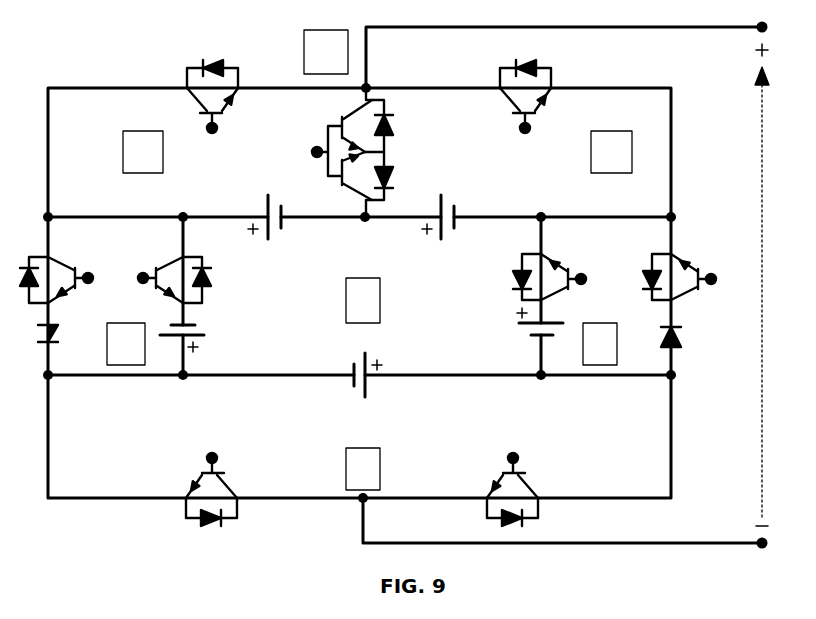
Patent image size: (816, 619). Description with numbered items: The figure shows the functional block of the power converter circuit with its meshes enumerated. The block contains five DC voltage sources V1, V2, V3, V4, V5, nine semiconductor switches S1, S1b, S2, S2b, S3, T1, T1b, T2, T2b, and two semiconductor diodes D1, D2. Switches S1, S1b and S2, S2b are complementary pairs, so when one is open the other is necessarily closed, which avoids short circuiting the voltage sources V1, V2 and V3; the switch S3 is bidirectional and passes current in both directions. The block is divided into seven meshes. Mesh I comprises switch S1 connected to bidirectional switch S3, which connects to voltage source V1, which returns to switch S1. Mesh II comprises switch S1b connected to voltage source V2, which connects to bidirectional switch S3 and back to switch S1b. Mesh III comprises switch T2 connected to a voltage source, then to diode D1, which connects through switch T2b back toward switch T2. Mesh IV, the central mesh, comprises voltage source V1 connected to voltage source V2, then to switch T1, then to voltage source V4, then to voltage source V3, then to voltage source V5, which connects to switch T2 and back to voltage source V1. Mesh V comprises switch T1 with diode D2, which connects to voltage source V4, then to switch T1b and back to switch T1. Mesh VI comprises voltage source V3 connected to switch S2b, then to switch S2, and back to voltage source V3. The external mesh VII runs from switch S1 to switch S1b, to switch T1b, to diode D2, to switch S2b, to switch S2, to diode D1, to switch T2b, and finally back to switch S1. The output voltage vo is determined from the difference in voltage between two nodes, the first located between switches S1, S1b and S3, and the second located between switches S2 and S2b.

The switch S1 is at (212, 118).
The complementary switch S1b is at (532, 145).
The switch S2 is at (211, 473).
The complementary switch S2b is at (520, 414).
The bidirectional switch S3 is at (336, 152).
The switch T1 is at (535, 277).
The switch T1b is at (623, 259).
The switch T2 is at (194, 280).
The switch T2b is at (119, 260).
The semiconductor diode D1 is at (69, 344).
The semiconductor diode D2 is at (651, 345).
The DC voltage source V1 is at (270, 238).
The DC voltage source V2 is at (442, 238).
The DC voltage source V3 is at (362, 396).
The DC voltage source V4 is at (521, 336).
The DC voltage source V5 is at (206, 344).
The output voltage vo is at (583, 285).
The mesh I is at (143, 152).
The mesh II is at (611, 152).
The mesh III is at (126, 344).
The mesh IV is at (363, 300).
The mesh V is at (600, 344).
The mesh VI is at (363, 469).
The mesh VII is at (326, 52).